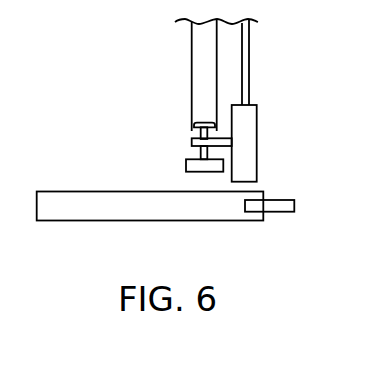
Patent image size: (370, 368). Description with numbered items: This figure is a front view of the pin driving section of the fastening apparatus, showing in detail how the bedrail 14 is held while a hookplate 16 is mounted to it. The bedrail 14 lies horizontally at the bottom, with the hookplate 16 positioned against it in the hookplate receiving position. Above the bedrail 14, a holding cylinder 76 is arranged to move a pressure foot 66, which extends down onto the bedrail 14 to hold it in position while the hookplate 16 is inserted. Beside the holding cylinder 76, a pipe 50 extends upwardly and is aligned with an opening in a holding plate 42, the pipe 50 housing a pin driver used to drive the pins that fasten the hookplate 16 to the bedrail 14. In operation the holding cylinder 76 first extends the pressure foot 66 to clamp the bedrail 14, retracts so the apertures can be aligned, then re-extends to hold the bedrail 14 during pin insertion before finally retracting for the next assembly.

The bedrail 14 is at (42, 191).
The hookplate 16 is at (282, 200).
The holding plate 42 is at (245, 115).
The pipe 50 is at (247, 40).
The pressure foot 66 is at (197, 164).
The holding cylinder 76 is at (195, 73).